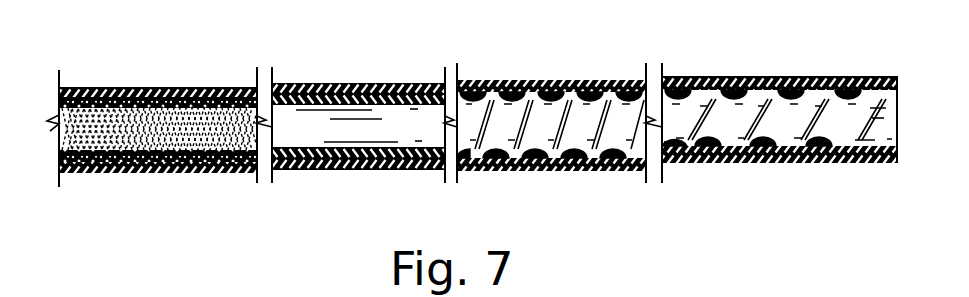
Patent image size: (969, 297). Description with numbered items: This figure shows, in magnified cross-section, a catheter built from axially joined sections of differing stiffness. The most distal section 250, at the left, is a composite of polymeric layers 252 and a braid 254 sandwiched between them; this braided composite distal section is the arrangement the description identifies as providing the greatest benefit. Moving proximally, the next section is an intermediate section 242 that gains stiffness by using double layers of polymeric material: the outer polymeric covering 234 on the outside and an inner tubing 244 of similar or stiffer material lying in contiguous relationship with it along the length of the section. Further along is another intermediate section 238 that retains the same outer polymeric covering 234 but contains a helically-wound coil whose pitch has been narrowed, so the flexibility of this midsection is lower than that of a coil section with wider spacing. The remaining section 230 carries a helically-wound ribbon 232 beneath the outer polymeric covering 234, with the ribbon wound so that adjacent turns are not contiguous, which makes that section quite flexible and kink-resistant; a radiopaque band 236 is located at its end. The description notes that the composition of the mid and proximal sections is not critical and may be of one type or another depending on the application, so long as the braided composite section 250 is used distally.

The distal section 230 is at (771, 109).
The helically-wound ribbon 232 is at (723, 123).
The outer polymeric covering 234 is at (412, 83).
The radiopaque band 236 is at (880, 74).
The intermediate section 238 is at (647, 122).
The intermediate section 242 is at (350, 108).
The inner tubing 244 is at (333, 170).
The most distal section 250 is at (152, 115).
The polymeric layers 252 is at (92, 87).
The braid 254 is at (140, 173).